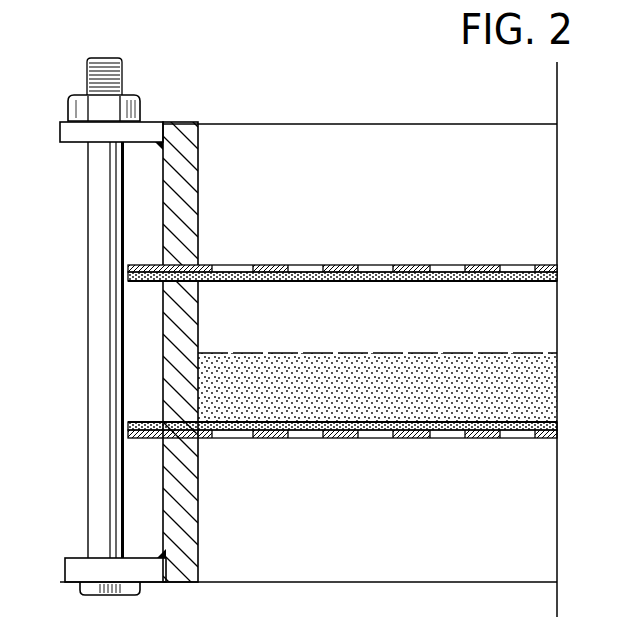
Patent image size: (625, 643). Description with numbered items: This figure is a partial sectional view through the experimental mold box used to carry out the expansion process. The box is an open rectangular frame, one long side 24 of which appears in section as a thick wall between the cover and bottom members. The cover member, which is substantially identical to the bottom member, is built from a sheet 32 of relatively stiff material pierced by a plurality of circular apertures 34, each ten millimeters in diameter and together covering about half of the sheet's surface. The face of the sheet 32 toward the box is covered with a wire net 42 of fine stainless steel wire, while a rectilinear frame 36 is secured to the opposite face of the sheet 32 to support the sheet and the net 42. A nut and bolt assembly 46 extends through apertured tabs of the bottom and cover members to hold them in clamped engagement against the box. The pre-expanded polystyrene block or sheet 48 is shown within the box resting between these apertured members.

The long side 24 is at (308, 339).
The sheet 32 is at (342, 354).
The apertures 34 is at (320, 268).
The rectilinear frame 36 is at (186, 175).
The wire net 42 is at (376, 281).
The nut and bolt assembly 46 is at (102, 330).
The pre-expanded polystyrene block or sheet 48 is at (472, 387).